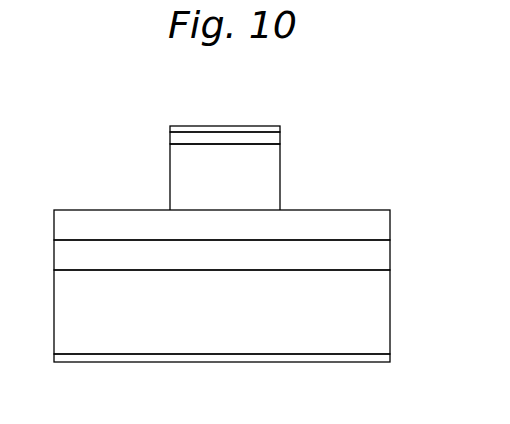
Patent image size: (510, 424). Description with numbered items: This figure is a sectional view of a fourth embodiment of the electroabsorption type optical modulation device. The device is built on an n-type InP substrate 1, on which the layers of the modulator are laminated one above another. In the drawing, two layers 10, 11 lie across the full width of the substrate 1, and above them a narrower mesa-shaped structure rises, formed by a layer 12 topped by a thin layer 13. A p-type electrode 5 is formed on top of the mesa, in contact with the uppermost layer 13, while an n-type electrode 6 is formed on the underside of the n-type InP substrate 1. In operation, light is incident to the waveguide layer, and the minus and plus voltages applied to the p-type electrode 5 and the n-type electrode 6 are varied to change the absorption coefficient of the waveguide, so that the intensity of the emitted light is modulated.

The n-type InP substrate 1 is at (385, 307).
The p-type electrode 5 is at (280, 127).
The n-type electrode 6 is at (385, 357).
The semiconductor layer 10 is at (385, 255).
The semiconductor layer 11 is at (385, 224).
The mesa layer 12 is at (276, 175).
The contact layer 13 is at (280, 138).